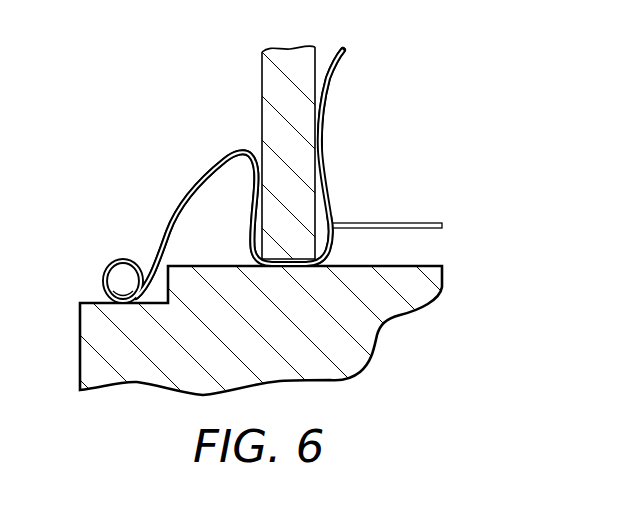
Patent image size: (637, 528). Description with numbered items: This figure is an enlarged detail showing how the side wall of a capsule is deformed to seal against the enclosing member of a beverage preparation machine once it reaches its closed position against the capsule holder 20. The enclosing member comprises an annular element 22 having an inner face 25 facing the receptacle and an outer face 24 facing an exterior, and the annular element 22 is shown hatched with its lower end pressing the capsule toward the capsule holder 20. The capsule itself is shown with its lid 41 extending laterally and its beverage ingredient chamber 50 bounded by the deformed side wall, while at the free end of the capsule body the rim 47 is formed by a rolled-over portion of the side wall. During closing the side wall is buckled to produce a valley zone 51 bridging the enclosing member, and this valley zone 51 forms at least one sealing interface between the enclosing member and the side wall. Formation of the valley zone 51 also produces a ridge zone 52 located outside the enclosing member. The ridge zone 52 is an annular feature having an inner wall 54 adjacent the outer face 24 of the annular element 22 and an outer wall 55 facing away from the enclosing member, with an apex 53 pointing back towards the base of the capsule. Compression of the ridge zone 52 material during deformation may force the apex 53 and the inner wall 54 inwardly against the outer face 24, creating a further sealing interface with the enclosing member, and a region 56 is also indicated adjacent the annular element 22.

The capsule holder 20 is at (122, 375).
The annular element 22 is at (268, 82).
The outer face 24 is at (262, 54).
The inner face 25 is at (320, 54).
The lid 41 is at (432, 222).
The rim 47 is at (99, 256).
The beverage ingredient chamber 50 is at (396, 97).
The valley zone 51 is at (336, 260).
The ridge zone 52 is at (259, 205).
The apex 53 is at (250, 153).
The inner wall 54 is at (246, 232).
The outer wall 55 is at (172, 226).
The space 56 is at (388, 130).